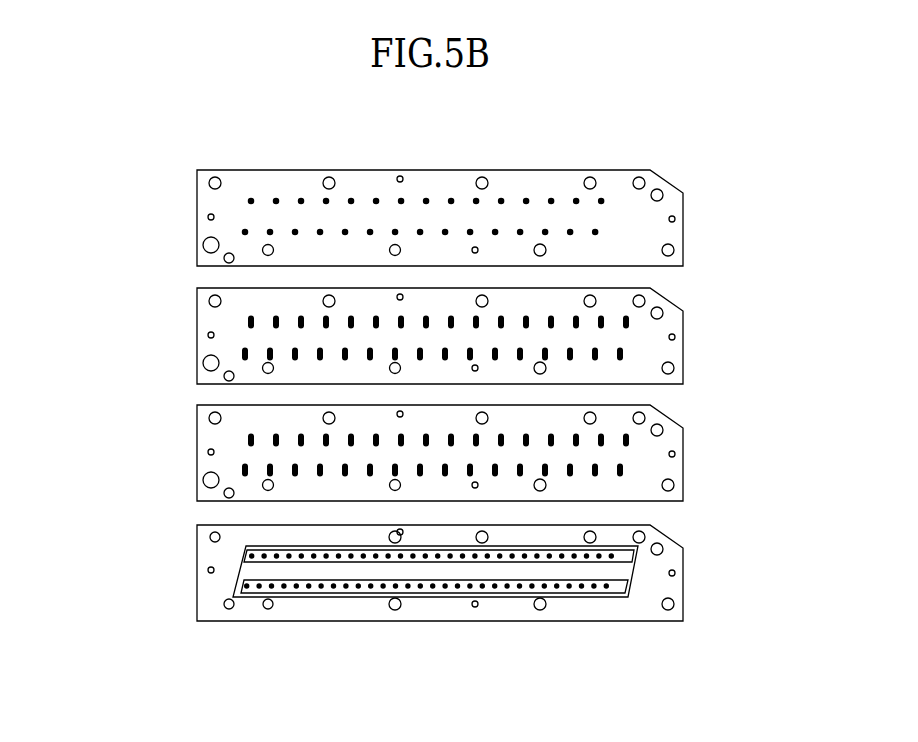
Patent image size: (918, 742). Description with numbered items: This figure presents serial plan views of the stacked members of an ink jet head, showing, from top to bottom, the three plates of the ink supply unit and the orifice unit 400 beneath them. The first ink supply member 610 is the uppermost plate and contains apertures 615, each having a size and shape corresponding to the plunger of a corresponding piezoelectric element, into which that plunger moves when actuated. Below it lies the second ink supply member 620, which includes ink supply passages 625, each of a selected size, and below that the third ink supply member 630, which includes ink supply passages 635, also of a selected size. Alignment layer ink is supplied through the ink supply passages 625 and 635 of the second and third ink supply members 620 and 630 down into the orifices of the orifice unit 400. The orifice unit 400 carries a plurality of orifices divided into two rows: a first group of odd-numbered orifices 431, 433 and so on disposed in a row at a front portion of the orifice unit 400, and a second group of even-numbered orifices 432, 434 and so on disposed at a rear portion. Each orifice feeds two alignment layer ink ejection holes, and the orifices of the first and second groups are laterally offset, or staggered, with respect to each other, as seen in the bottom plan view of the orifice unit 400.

The orifice unit 400 is at (389, 602).
The orifice of first group 431 is at (243, 585).
The orifice of second group 432 is at (258, 553).
The orifice of first group 433 is at (282, 584).
The orifice of second group 434 is at (277, 556).
The first ink supply member 610 is at (388, 193).
The apertures 615 is at (252, 199).
The second ink supply member 620 is at (425, 336).
The ink supply passages 625 is at (627, 322).
The third ink supply member 630 is at (432, 453).
The ink supply passages 635 is at (627, 440).